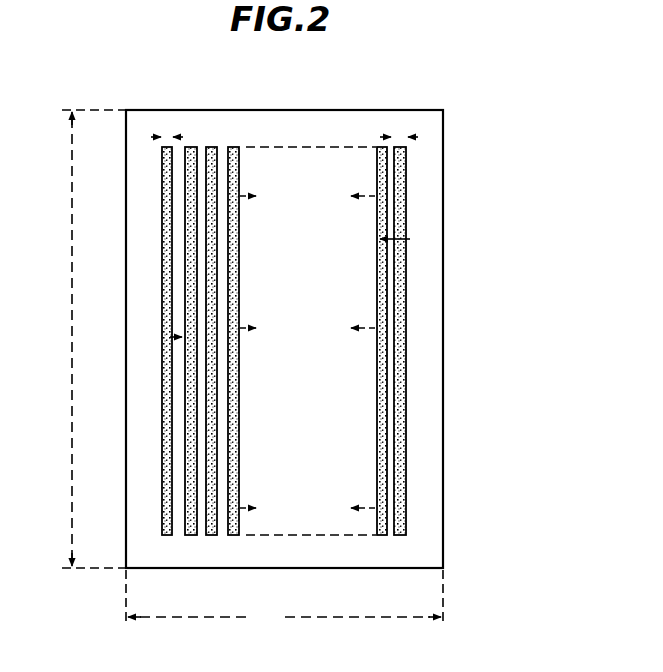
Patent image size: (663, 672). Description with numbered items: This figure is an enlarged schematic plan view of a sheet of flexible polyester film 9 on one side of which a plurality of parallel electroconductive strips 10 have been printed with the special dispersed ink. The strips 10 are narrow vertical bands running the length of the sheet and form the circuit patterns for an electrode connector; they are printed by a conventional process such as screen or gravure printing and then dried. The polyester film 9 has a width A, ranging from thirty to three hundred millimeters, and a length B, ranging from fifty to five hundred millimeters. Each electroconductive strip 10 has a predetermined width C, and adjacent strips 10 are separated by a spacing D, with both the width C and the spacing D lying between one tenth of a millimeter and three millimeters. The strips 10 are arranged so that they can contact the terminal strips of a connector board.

The polyester film 9 is at (444, 191).
The electroconductive strips 10 is at (162, 210).
The width of the base polyester film A is at (284, 602).
The length of the base polyester film B is at (93, 339).
The width of the electroconductive strips C is at (167, 135).
The spacing between the electroconductive strips D is at (178, 341).